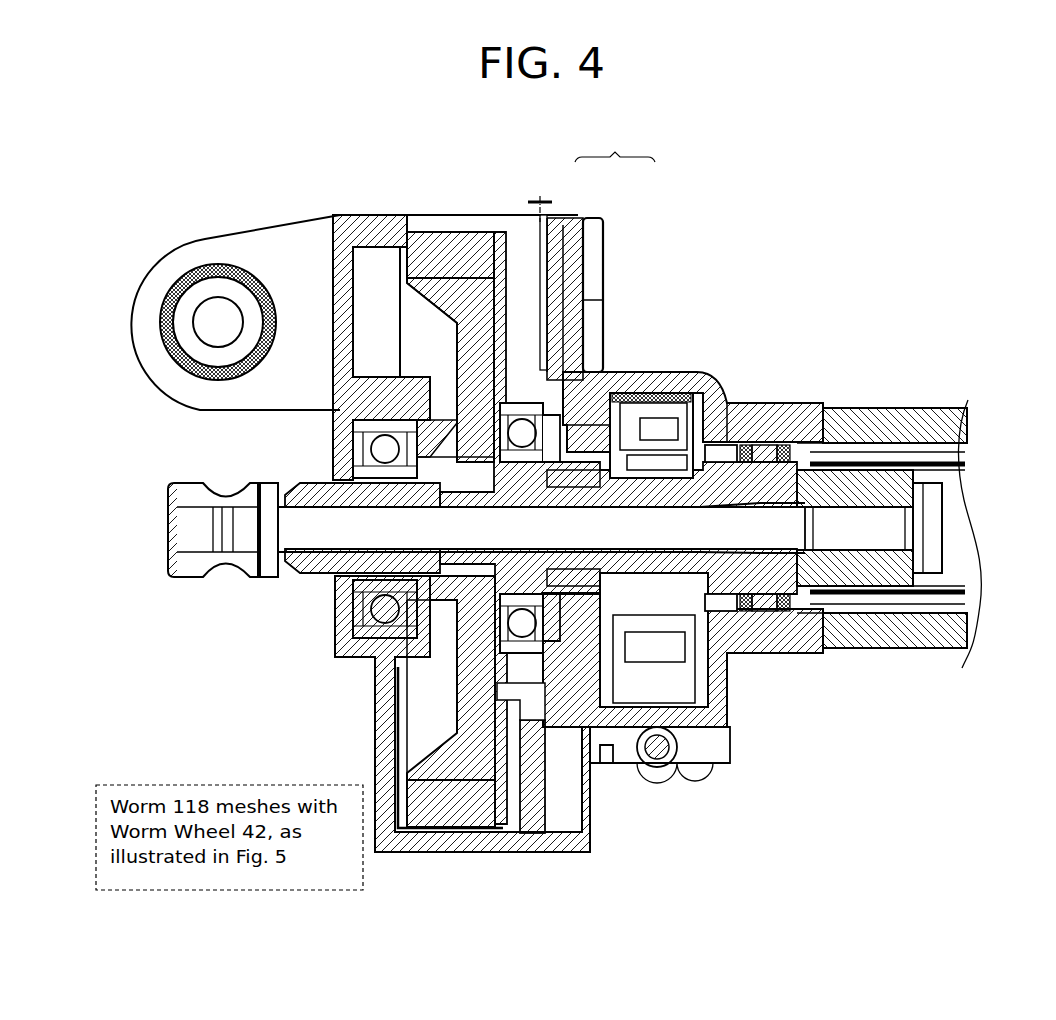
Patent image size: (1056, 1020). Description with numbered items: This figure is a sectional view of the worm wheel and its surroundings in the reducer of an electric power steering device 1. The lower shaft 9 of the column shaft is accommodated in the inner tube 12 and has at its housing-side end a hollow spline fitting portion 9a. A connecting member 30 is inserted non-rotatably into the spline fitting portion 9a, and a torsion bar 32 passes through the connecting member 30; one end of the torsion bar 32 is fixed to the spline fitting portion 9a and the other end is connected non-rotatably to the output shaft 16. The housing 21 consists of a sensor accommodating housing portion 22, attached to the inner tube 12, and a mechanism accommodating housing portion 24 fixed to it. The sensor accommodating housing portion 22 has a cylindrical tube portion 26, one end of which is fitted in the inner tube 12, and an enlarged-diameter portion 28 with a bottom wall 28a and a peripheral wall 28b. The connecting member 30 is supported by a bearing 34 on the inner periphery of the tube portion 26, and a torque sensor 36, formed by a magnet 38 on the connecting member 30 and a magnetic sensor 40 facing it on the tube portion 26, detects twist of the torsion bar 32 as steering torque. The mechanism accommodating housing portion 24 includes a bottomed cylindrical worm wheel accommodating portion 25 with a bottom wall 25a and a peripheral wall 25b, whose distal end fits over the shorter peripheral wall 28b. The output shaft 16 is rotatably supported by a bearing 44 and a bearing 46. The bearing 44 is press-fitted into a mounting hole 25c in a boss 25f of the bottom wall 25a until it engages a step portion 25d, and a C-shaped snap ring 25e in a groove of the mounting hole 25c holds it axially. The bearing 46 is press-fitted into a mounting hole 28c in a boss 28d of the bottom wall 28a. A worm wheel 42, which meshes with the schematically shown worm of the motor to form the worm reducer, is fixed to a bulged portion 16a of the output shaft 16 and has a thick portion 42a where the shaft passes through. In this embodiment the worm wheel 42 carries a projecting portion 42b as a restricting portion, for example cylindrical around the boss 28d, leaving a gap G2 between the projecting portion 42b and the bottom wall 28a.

The steering device 1 is at (767, 285).
The lower shaft 9 is at (966, 548).
The spline fitting portion 9a is at (944, 490).
The inner tube 12 is at (888, 408).
The output shaft 16 is at (186, 578).
The bulged portion 16a is at (447, 498).
The housing 21 is at (615, 144).
The sensor accommodating housing portion 22 is at (582, 226).
The mechanism accommodating housing portion 24 is at (558, 226).
The worm wheel accommodating portion 25 is at (394, 207).
The bottom wall 25a is at (374, 735).
The peripheral wall 25b is at (447, 215).
The mounting hole 25c is at (376, 405).
The step portion 25d is at (347, 418).
The snap ring 25e is at (438, 420).
The boss 25f is at (452, 338).
The tube portion 26 is at (868, 426).
The enlarged-diameter portion 28 is at (601, 246).
The bottom wall 28a is at (589, 818).
The peripheral wall 28b is at (540, 834).
The mounting hole 28c is at (592, 348).
The boss 28d is at (592, 318).
The connecting member 30 is at (786, 614).
The torsion bar 32 is at (790, 443).
The bearing 34 is at (748, 614).
The torque sensor 36 is at (674, 420).
The magnet 38 is at (735, 412).
The magnetic sensor 40 is at (656, 400).
The worm wheel 42 is at (447, 816).
The thick portion 42a is at (437, 634).
The projecting portion 42b is at (573, 304).
The bearing 44 is at (352, 442).
The bearing 46 is at (642, 398).
The gap G2 is at (540, 194).